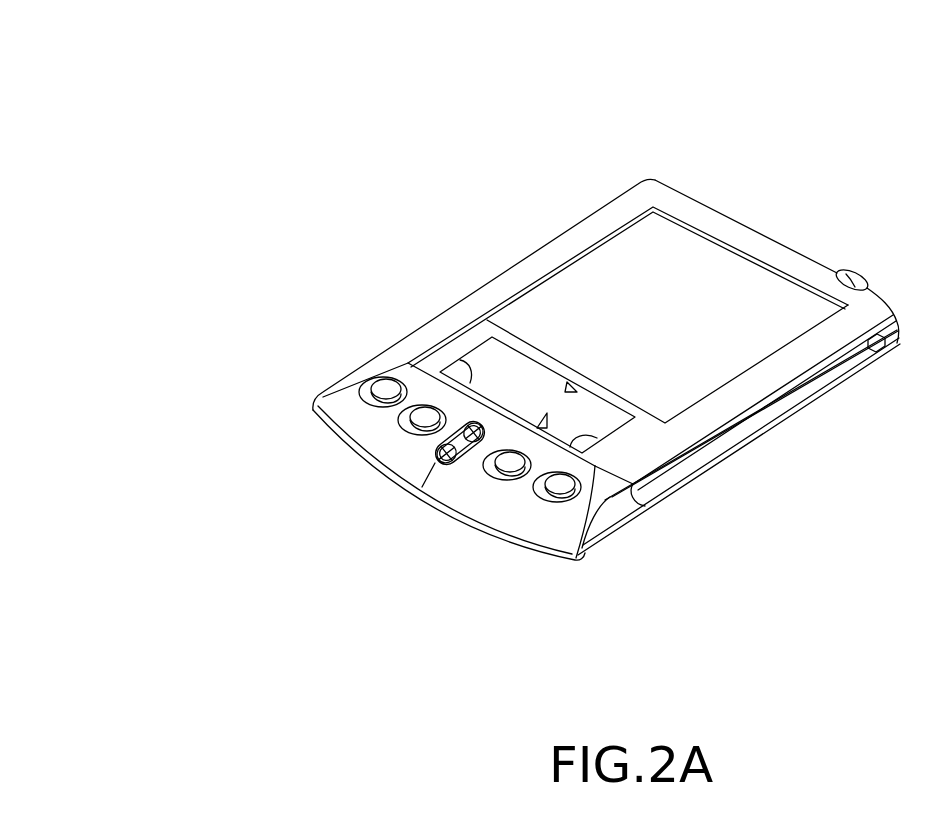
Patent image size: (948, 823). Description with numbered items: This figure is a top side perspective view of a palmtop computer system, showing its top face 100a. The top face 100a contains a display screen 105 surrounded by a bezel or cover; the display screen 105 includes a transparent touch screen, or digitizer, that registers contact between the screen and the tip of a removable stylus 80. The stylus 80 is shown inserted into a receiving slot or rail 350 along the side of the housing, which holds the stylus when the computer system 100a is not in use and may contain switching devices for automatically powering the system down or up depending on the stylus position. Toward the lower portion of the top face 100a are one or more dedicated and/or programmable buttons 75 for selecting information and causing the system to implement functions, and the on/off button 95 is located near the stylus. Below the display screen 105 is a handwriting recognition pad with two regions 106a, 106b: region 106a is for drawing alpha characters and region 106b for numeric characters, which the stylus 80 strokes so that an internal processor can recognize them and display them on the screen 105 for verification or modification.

The top face 100a is at (94, 48).
The display screen 105 is at (669, 266).
The alpha character region 106a is at (530, 387).
The numeric character region 106b is at (613, 425).
The buttons 75 is at (383, 390).
The on/off button 95 is at (843, 276).
The receiving slot or rail 350 is at (867, 362).
The stylus 80 is at (748, 430).